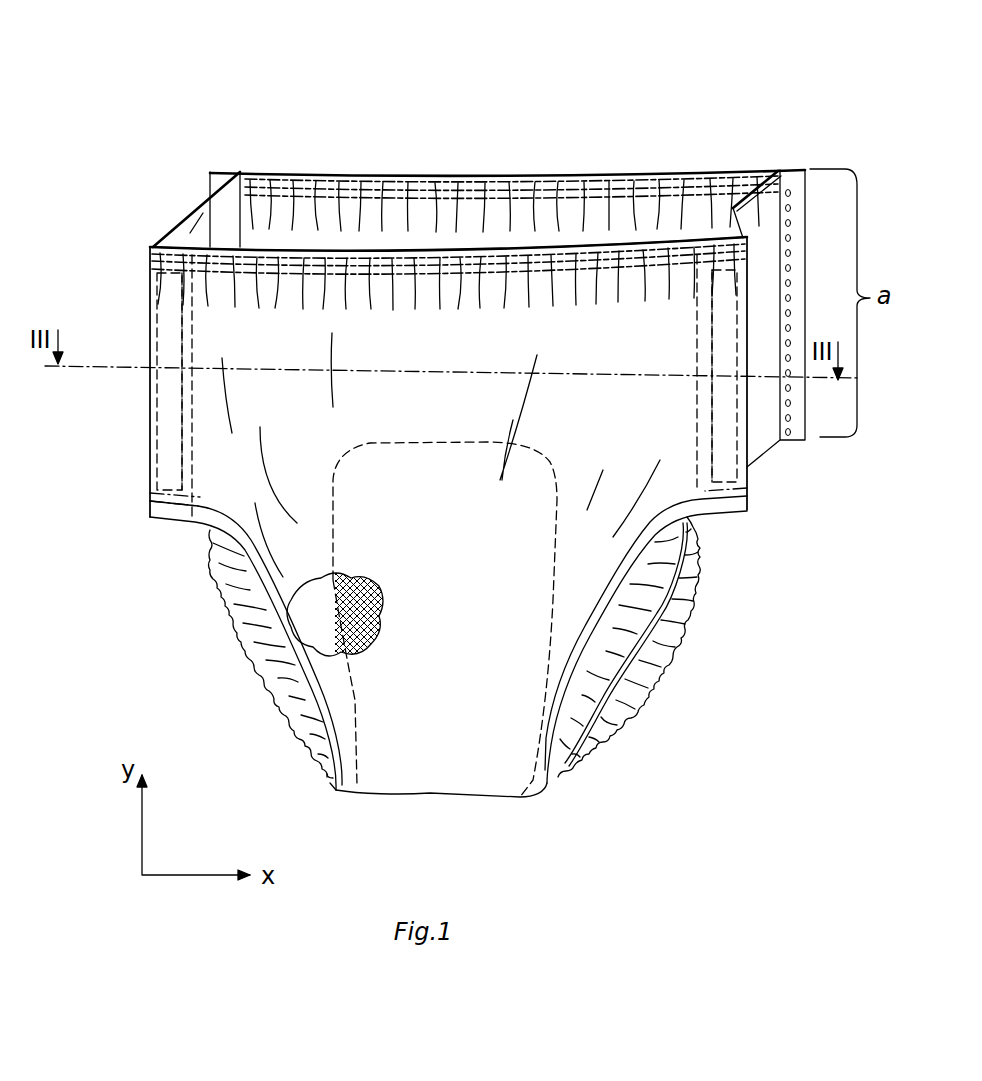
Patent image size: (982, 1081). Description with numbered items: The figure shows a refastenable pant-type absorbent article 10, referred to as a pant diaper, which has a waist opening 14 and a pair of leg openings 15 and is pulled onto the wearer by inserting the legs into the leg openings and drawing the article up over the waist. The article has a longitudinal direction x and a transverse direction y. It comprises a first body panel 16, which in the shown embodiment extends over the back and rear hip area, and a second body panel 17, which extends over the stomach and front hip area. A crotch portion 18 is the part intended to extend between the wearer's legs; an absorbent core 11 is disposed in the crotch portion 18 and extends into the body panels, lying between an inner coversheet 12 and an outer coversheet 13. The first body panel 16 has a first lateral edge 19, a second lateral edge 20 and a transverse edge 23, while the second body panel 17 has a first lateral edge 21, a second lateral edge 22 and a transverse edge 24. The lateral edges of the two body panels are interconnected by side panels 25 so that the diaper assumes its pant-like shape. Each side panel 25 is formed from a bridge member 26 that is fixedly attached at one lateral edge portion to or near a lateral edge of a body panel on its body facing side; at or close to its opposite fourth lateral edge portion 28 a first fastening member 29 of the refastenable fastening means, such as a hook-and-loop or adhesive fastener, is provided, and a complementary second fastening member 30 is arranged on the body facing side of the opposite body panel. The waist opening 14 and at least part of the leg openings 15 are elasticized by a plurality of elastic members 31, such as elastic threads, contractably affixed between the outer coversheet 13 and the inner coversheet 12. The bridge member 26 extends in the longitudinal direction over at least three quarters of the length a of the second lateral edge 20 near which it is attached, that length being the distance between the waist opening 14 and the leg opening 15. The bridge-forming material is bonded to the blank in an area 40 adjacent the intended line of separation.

The pant-type absorbent article 10 is at (226, 79).
The absorbent core 11 is at (317, 700).
The inner coversheet 12 is at (380, 414).
The outer coversheet 13 is at (306, 619).
The waist opening 14 is at (572, 188).
The leg openings 15 is at (238, 625).
The first body panel 16 is at (380, 228).
The second body panel 17 is at (237, 483).
The crotch portion 18 is at (343, 730).
The first lateral edge of the first body panel 19 is at (212, 182).
The second lateral edge of the first body panel 20 is at (805, 193).
The first lateral edge of the second body panel 21 is at (148, 315).
The second lateral edge of the second body panel 22 is at (748, 477).
The transverse edge of the first body panel 23 is at (312, 248).
The transverse edge of the second body panel 24 is at (446, 173).
The side panels 25 is at (195, 232).
The bridge member 26 is at (220, 217).
The fourth lateral edge portion 28 is at (193, 312).
The first fastening member 29 is at (187, 438).
The second fastening member 30 is at (167, 403).
The elastic members 31 is at (495, 178).
The bonding area 40 is at (792, 298).